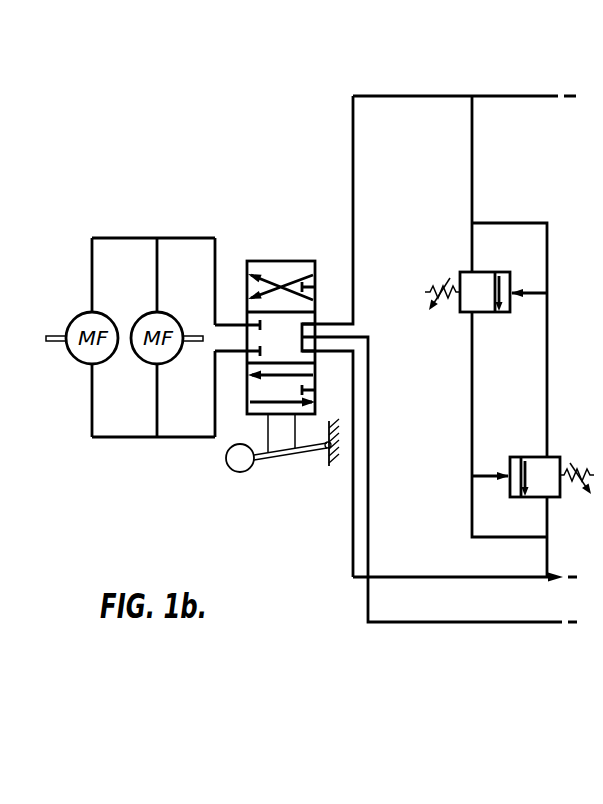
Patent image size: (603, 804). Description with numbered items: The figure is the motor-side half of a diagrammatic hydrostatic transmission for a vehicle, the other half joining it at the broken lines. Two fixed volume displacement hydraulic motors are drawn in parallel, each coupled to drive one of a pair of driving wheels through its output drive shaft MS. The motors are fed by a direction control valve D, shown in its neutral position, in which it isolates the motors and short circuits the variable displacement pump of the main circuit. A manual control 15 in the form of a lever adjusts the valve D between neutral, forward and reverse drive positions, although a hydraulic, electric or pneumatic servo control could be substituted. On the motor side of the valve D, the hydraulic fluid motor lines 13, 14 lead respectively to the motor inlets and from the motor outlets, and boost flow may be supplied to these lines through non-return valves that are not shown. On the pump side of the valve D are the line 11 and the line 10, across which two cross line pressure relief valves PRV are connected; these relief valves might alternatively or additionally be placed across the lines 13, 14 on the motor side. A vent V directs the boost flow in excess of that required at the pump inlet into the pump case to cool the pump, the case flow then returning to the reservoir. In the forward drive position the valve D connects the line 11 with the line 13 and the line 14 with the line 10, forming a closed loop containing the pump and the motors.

The line 10 is at (485, 578).
The line 11 is at (523, 96).
The hydraulic fluid motor line 13 is at (188, 238).
The hydraulic fluid motor line 14 is at (194, 438).
The manual control 15 is at (245, 472).
The direction control valve D is at (286, 261).
The vent V is at (369, 500).
The output drive shaft MS is at (63, 335).
The cross line pressure relief valve PRV is at (468, 270).